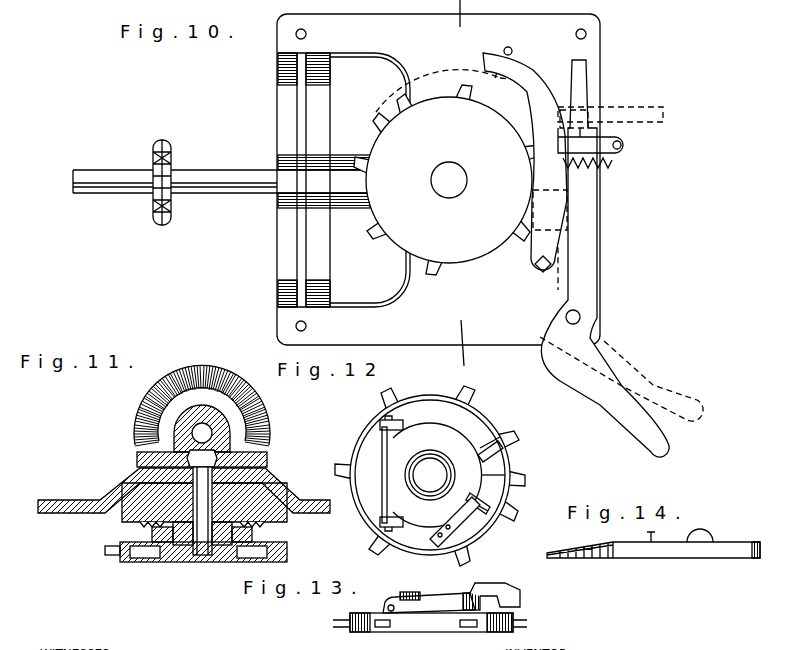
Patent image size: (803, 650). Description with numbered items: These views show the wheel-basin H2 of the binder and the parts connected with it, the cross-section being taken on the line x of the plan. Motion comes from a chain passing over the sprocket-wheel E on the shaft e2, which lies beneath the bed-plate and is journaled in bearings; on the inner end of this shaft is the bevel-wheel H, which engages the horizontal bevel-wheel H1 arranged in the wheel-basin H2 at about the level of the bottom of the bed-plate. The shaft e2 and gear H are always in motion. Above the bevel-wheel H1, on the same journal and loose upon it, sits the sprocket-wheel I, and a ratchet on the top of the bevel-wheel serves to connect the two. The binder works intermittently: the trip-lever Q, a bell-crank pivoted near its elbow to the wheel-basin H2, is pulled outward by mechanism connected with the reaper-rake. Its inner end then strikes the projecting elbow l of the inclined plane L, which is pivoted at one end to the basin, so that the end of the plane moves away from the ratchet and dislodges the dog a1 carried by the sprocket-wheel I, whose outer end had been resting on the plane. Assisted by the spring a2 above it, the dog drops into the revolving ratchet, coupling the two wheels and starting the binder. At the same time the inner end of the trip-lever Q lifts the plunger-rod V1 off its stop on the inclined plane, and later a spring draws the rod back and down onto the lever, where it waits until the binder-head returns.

In FIG. 10, the wheel-basin H2 is at (496, 159).
In FIG. 11, the wheel-basin H2 is at (184, 490).
In FIG. 10, the sprocket-wheel I is at (448, 180).
In FIG. 11, the sprocket-wheel I is at (202, 552).
In FIG. 12, the sprocket-wheel I is at (430, 476).
In FIG. 13, the sprocket-wheel I is at (430, 628).
In FIG. 10, the shaft e2 is at (221, 181).
In FIG. 10, the sprocket-wheel E is at (159, 173).
In FIG. 10, the plunger-rod V1 is at (616, 105).
In FIG. 10, the projecting elbow l is at (584, 119).
In FIG. 10, the inclined plane L is at (550, 211).
In FIG. 14, the inclined plane L is at (653, 555).
In FIG. 10, the trip-lever Q is at (621, 258).
In FIG. 11, the bevel-wheel H is at (202, 408).
In FIG. 11, the bevel-wheel H1 is at (204, 505).
In FIG. 11, the spring a2 is at (156, 531).
In FIG. 12, the spring a2 is at (455, 522).
In FIG. 11, the dog a1 is at (255, 532).
In FIG. 12, the dog a1 is at (394, 473).
In FIG. 13, the dog a1 is at (451, 599).
In FIG. 12, the section line marker x is at (465, 351).